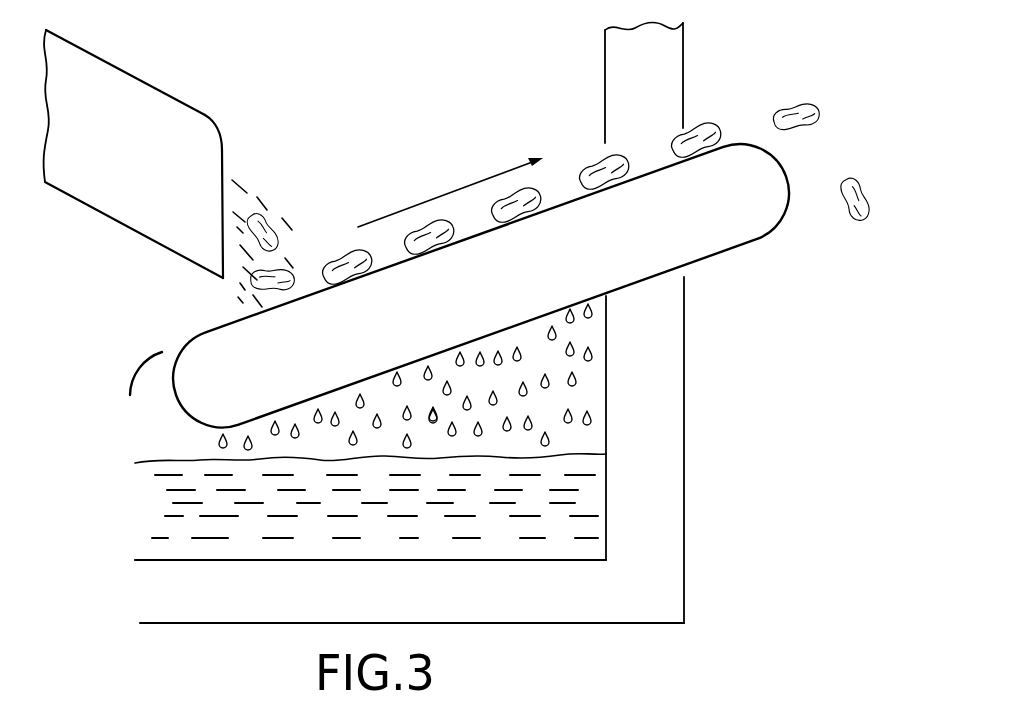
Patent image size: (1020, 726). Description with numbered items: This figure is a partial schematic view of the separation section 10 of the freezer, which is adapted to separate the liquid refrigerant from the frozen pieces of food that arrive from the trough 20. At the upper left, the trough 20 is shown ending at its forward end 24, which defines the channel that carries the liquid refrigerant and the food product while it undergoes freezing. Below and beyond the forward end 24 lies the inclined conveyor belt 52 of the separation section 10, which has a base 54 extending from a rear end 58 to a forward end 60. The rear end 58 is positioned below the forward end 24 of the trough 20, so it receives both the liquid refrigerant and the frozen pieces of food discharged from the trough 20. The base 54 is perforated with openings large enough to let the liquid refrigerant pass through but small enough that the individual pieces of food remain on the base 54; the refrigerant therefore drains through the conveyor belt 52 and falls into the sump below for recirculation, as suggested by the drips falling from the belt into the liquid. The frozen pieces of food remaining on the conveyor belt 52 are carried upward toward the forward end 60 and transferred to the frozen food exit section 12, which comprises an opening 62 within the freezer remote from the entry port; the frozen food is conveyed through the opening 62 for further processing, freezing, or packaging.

The separation section 10 is at (430, 48).
The frozen food exit section 12 is at (708, 264).
The trough 20 is at (138, 50).
The forward end 24 is at (207, 117).
The conveyor belt 52 is at (711, 214).
The base 54 is at (157, 349).
The rear end 58 is at (93, 369).
The forward end 60 is at (843, 101).
The opening 62 is at (690, 268).